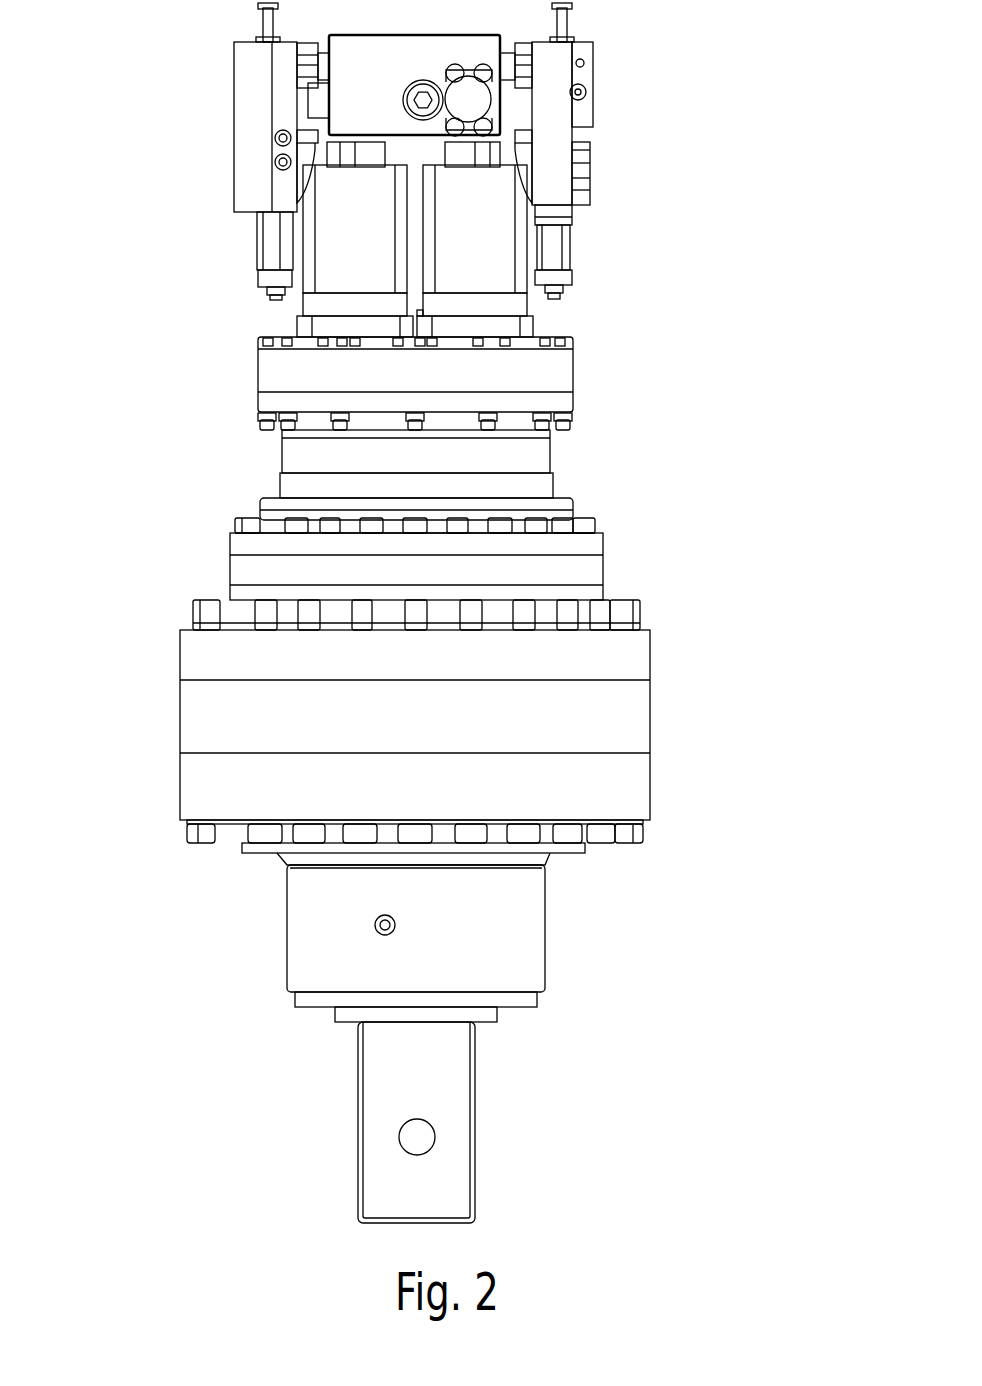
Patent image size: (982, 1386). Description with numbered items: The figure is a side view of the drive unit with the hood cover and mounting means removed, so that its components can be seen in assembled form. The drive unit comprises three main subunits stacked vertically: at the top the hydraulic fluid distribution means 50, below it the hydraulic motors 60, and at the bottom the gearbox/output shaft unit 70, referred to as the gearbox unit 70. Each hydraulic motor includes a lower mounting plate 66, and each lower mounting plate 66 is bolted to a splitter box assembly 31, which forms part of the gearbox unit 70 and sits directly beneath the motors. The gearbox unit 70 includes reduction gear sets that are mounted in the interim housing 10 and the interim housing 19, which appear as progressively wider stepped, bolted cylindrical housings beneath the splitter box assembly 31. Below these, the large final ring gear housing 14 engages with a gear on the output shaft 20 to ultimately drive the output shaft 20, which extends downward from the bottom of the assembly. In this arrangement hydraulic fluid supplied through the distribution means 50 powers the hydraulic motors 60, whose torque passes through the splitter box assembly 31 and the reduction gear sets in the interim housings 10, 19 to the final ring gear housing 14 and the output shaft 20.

The interim housing 10 is at (617, 495).
The final ring gear housing 14 is at (655, 720).
The interim housing 19 is at (635, 585).
The output shaft 20 is at (480, 1091).
The splitter box assembly 31 is at (594, 380).
The hydraulic fluid distribution means 50 is at (222, 150).
The hydraulic motors 60 is at (279, 322).
The lower mounting plate 66 is at (553, 319).
The gearbox/output shaft unit 70 is at (436, 721).